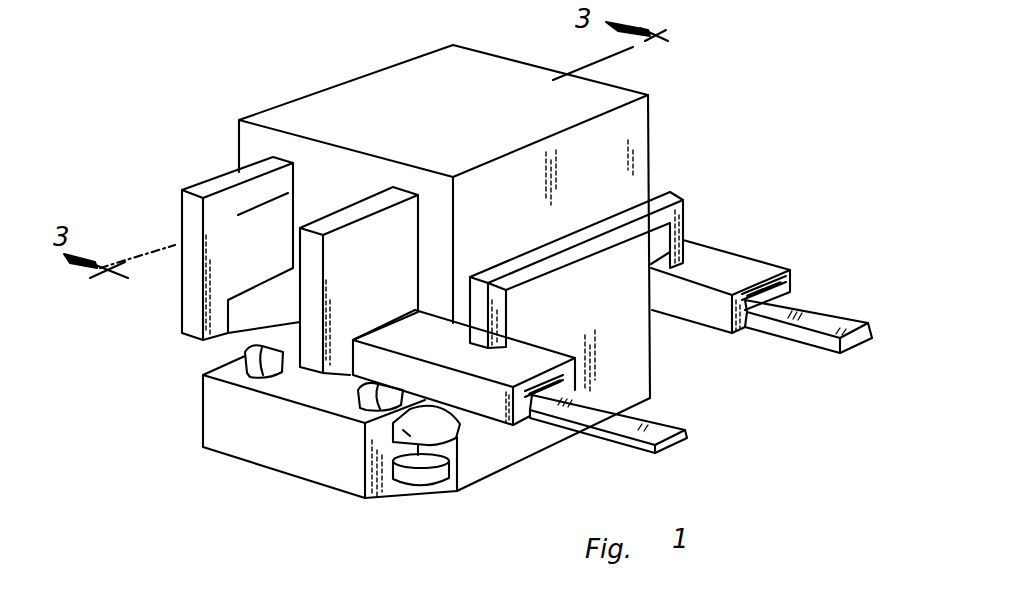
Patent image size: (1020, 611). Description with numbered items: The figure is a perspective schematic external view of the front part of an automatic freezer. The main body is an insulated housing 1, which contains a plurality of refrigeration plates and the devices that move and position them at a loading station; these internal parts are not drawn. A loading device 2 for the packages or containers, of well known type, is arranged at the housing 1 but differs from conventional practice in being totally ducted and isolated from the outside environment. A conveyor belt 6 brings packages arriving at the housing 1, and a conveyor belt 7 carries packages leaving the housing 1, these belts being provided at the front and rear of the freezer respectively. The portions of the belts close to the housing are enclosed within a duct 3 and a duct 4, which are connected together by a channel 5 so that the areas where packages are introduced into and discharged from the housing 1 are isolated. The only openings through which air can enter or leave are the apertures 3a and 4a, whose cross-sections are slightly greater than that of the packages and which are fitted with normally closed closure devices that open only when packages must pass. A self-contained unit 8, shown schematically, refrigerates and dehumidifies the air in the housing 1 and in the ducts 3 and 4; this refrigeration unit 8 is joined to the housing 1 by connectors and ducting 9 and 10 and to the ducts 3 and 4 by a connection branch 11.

The insulated housing 1 is at (342, 100).
The loading device 2 is at (222, 168).
The duct 3 is at (500, 408).
The aperture 3a is at (573, 373).
The duct 4 is at (715, 267).
The aperture 4a is at (778, 289).
The channel 5 is at (627, 203).
The conveyor belt 6 is at (625, 420).
The conveyor belt 7 is at (808, 323).
The self-contained refrigeration unit 8 is at (220, 418).
The connector and ducting 9 is at (240, 357).
The connector and ducting 10 is at (417, 477).
The connection branch 11 is at (458, 427).